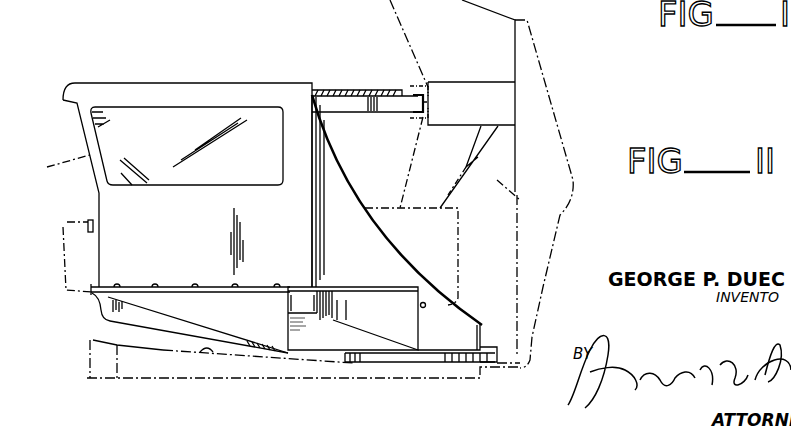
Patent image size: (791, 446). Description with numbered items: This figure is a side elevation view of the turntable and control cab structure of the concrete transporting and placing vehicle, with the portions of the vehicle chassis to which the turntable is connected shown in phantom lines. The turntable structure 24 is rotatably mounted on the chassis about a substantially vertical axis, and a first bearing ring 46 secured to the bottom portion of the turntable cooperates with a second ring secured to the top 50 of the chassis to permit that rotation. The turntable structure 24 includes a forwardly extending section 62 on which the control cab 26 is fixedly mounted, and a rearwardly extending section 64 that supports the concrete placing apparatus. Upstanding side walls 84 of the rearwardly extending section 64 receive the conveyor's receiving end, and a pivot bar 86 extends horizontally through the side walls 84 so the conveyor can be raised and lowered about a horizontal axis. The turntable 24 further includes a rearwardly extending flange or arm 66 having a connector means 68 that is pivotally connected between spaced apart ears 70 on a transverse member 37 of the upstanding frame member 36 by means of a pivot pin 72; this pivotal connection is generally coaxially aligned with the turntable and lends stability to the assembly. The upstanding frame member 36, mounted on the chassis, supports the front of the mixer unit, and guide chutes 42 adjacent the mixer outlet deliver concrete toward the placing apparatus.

The turntable structure 24 is at (291, 66).
The control cab 26 is at (148, 83).
The upstanding frame member 36 is at (557, 137).
The transverse member 37 is at (477, 80).
The guide chutes 42 is at (452, 188).
The first bearing ring 46 is at (427, 362).
The top of the chassis 50 is at (207, 352).
The forwardly extending section 62 is at (185, 0).
The rearwardly extending section 64 is at (480, 336).
The rearwardly extending flange or arm 66 is at (345, 105).
The connector means 68 is at (410, 103).
The ears 70 is at (427, 88).
The pivot pin 72 is at (412, 127).
The upstanding side walls 84 is at (342, 203).
The pivot bar 86 is at (428, 305).